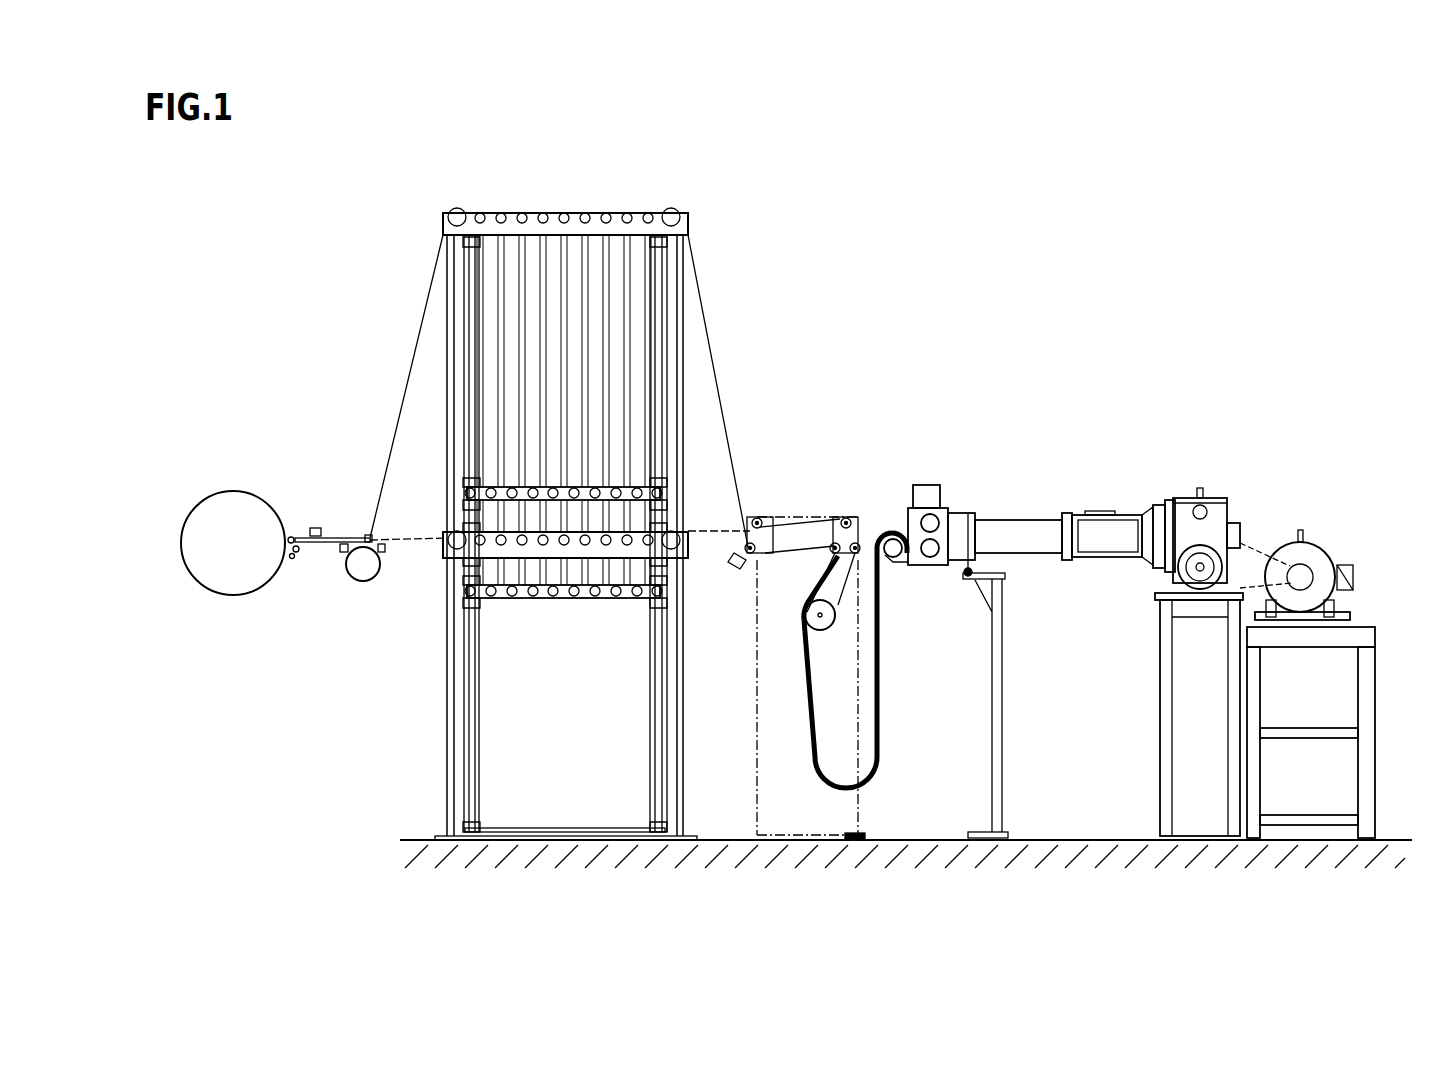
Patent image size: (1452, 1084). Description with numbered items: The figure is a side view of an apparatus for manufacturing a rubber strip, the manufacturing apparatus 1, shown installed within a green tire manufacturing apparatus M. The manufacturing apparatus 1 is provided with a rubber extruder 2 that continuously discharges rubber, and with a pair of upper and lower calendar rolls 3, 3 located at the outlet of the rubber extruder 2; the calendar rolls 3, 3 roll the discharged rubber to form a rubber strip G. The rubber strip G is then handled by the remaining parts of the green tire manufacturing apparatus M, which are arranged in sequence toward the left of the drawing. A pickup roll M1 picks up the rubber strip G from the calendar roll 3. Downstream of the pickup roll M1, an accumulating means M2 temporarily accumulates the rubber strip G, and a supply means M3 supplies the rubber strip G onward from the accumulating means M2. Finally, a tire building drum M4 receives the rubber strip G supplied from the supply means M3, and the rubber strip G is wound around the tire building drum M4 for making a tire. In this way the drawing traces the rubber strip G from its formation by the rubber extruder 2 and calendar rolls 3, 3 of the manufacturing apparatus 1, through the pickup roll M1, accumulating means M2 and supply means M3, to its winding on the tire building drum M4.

The green tire manufacturing apparatus M is at (789, 280).
The tire building drum M4 is at (232, 492).
The supply means M3 is at (322, 546).
The accumulating means M2 is at (672, 525).
The pickup roll M1 is at (893, 562).
The rubber strip G is at (890, 540).
The calendar rolls 3 is at (934, 520).
The manufacturing apparatus 1 is at (1036, 458).
The rubber extruder 2 is at (1192, 503).